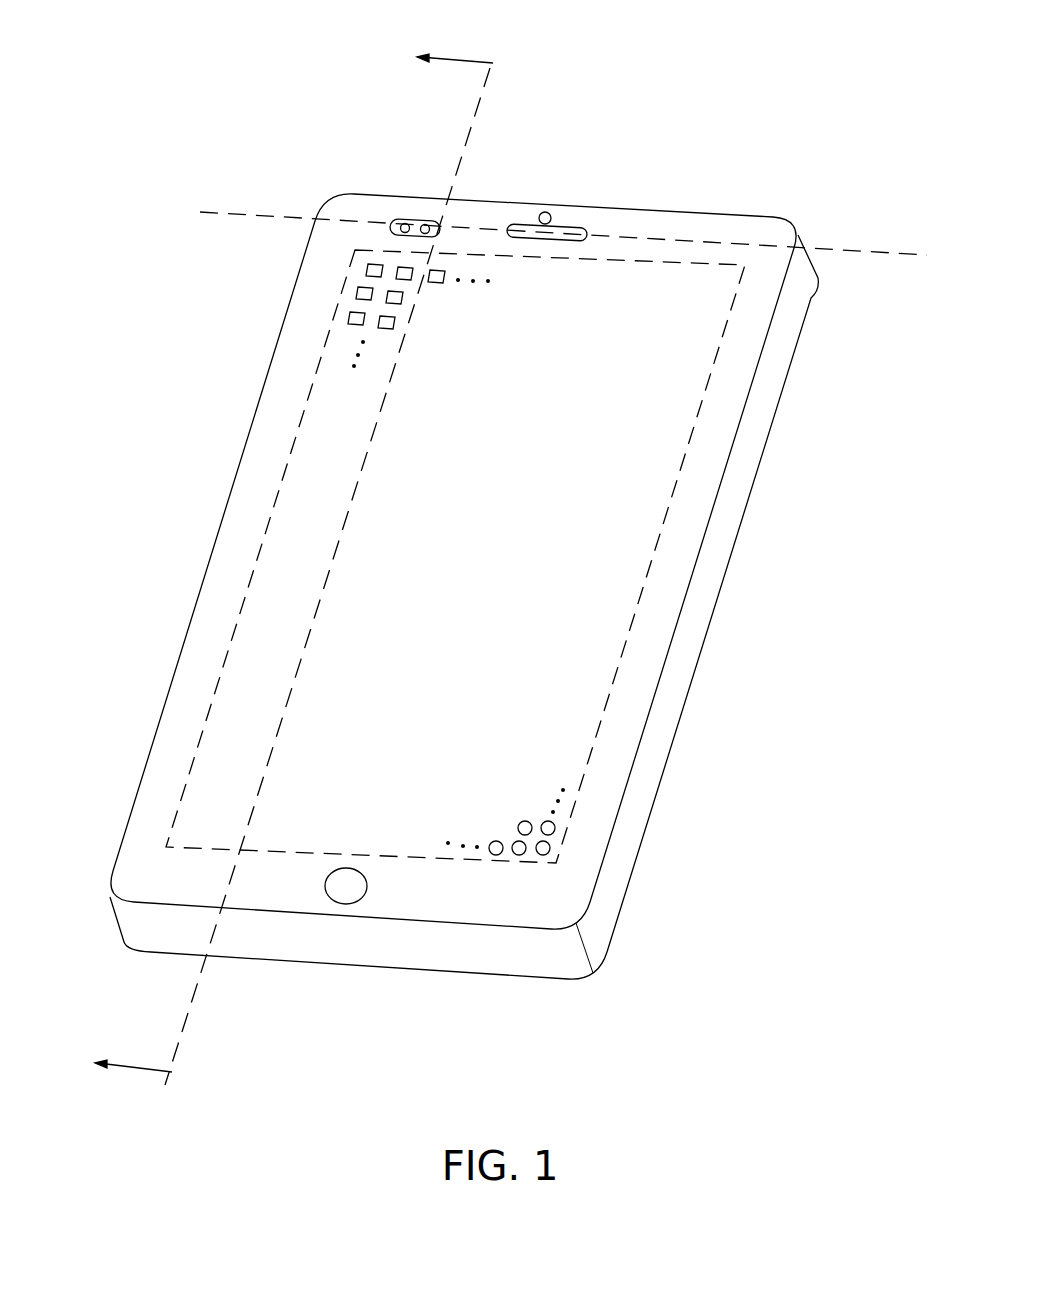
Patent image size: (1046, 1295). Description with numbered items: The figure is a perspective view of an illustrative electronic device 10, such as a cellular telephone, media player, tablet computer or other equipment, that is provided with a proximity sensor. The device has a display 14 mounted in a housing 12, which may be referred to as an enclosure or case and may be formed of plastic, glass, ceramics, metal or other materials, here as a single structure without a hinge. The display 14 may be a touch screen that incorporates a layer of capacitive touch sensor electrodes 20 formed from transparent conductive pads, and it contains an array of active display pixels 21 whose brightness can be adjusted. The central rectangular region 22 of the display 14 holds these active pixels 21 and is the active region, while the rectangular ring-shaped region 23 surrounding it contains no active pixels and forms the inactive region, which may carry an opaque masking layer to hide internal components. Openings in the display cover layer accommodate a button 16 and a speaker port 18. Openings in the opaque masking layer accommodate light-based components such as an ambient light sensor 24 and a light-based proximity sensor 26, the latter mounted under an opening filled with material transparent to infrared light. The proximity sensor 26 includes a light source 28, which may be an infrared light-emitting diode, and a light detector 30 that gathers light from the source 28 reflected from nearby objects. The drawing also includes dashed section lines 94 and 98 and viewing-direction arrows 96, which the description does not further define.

The electronic device 10 is at (501, 562).
The housing 12 is at (777, 369).
The display 14 is at (496, 556).
The button 16 is at (347, 905).
The speaker port 18 is at (520, 228).
The electrodes 20 is at (358, 290).
The pixels 21 is at (522, 822).
The rectangular region 22 is at (612, 716).
The rectangular ring-shaped region 23 is at (478, 907).
The ambient light sensor 24 is at (548, 212).
The light-based proximity sensor 26 is at (393, 222).
The light source 28 is at (407, 221).
The light detector 30 is at (427, 222).
The cut line 94 is at (188, 1022).
The viewing direction 96 is at (455, 62).
The cut line 98 is at (874, 252).